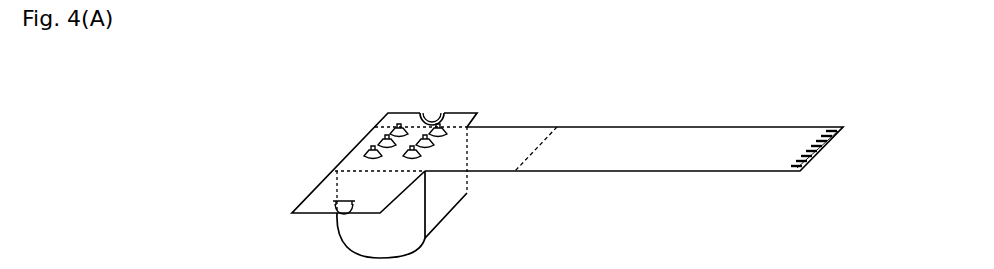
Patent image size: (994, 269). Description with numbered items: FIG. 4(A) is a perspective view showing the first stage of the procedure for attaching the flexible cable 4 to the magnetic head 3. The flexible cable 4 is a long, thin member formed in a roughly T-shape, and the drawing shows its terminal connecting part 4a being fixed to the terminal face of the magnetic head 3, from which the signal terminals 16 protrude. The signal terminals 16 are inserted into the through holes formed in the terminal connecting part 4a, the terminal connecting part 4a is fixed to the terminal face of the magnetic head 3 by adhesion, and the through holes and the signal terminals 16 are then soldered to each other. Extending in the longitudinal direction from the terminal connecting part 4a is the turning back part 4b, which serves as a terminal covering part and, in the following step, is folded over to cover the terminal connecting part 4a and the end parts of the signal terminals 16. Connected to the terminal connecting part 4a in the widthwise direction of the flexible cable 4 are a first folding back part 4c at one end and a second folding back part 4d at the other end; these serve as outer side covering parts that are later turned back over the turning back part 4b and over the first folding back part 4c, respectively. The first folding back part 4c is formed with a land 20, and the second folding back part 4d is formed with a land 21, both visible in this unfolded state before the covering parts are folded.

The magnetic head 3 is at (448, 214).
The flexible cable 4 is at (547, 161).
The terminal connecting part 4a is at (354, 164).
The turning back part 4b is at (498, 132).
The first folding back part 4c is at (311, 200).
The second folding back part 4d is at (398, 115).
The signal terminals 16 is at (392, 130).
The land 20 is at (340, 213).
The land 21 is at (438, 109).